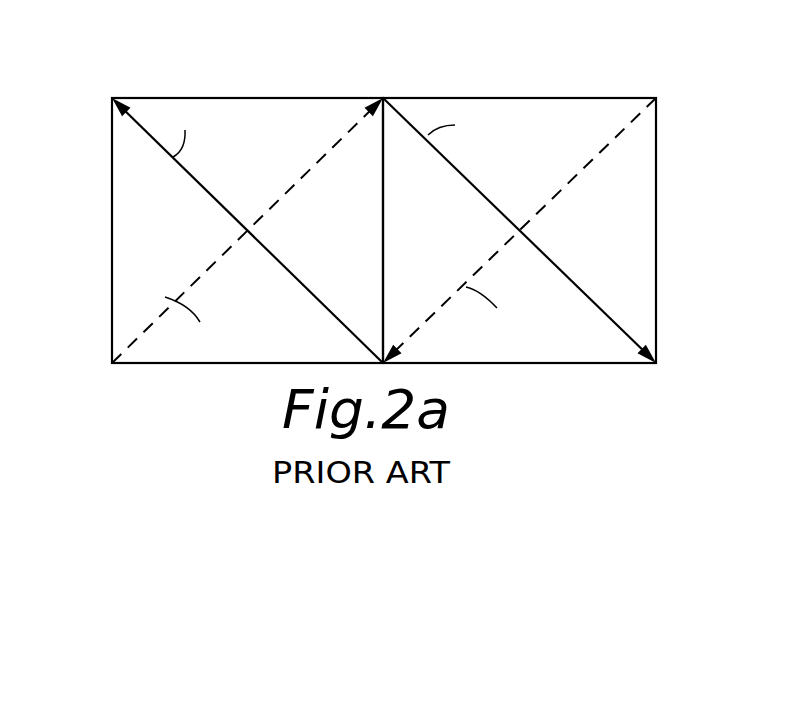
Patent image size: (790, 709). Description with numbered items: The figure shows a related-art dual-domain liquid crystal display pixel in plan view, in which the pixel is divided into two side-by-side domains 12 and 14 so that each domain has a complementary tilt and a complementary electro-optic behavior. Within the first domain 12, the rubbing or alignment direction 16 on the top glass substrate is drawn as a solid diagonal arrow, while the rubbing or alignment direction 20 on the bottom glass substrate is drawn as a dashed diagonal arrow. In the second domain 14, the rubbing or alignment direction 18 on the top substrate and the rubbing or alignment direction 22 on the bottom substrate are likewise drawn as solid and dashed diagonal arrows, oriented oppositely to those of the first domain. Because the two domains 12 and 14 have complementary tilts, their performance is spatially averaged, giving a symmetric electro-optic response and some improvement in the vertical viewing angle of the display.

The domain 12 is at (255, 97).
The domain 14 is at (540, 95).
The rubbing or alignment direction 16 is at (213, 190).
The rubbing or alignment direction 18 is at (487, 197).
The rubbing or alignment direction 20 is at (292, 185).
The rubbing or alignment direction 22 is at (552, 197).